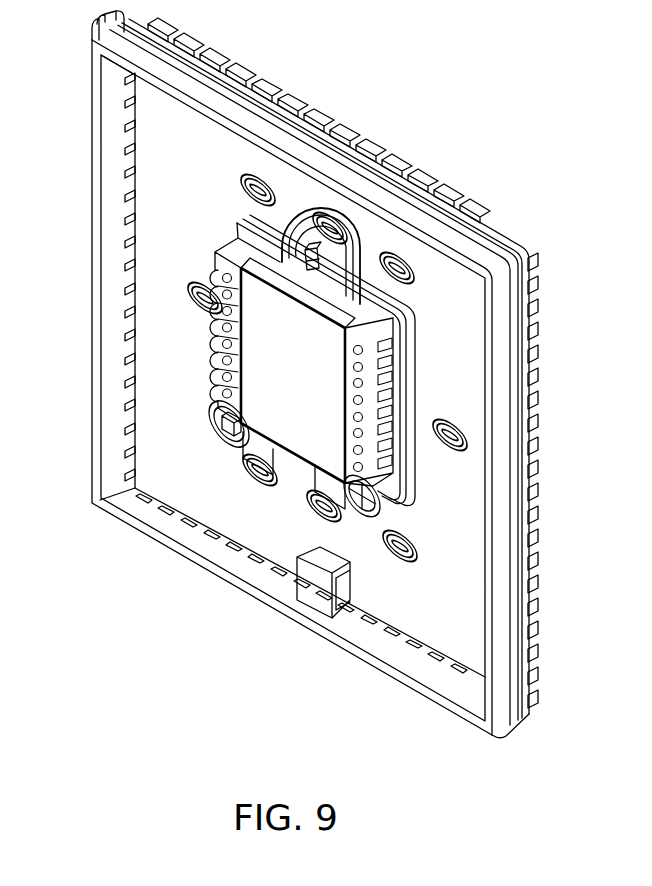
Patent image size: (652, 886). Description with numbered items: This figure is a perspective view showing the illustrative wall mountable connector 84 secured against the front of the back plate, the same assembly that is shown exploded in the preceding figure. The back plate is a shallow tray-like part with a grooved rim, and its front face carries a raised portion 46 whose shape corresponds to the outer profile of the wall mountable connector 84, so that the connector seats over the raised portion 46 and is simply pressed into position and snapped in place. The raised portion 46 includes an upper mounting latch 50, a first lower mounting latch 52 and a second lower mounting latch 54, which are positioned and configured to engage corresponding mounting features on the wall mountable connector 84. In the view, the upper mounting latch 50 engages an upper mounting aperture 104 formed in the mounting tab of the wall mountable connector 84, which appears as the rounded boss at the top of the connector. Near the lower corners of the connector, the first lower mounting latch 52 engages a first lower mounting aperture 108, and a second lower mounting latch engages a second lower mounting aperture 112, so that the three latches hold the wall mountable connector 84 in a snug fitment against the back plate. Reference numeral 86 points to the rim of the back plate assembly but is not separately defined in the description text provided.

The raised portion 46 is at (410, 466).
The upper mounting latch 50 is at (312, 252).
The first lower mounting latch 52 is at (226, 440).
The second lower mounting latch 54 is at (412, 552).
The wall mountable connector 84 is at (404, 372).
The wall plate 86 is at (468, 254).
The upper mounting aperture 104 is at (314, 262).
The first lower mounting aperture 108 is at (216, 412).
The second lower mounting aperture 112 is at (410, 496).